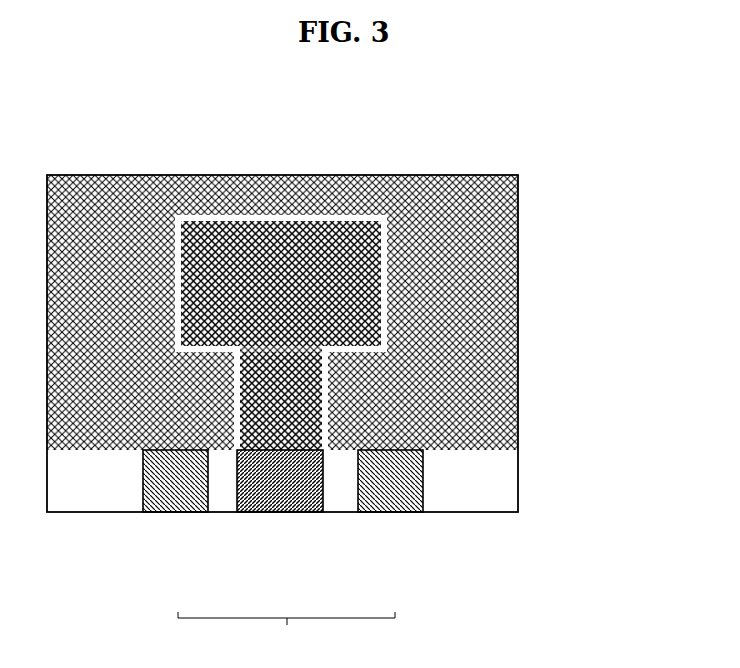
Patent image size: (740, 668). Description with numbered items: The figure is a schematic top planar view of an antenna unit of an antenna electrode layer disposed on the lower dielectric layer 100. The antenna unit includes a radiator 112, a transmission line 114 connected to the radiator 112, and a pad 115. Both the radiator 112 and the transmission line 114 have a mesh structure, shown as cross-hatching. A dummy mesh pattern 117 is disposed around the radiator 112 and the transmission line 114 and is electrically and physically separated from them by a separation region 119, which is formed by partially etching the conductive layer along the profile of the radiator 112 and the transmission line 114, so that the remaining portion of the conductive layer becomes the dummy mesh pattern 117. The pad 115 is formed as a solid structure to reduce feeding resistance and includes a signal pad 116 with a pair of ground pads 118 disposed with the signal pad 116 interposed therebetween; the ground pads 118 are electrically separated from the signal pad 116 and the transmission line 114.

The lower dielectric layer 100 is at (498, 492).
The radiator 112 is at (285, 250).
The transmission line 114 is at (303, 396).
The pad 115 is at (286, 636).
The signal pad 116 is at (281, 497).
The dummy mesh pattern 117 is at (520, 328).
The ground pad 118 is at (187, 497).
The separation region 119 is at (179, 220).